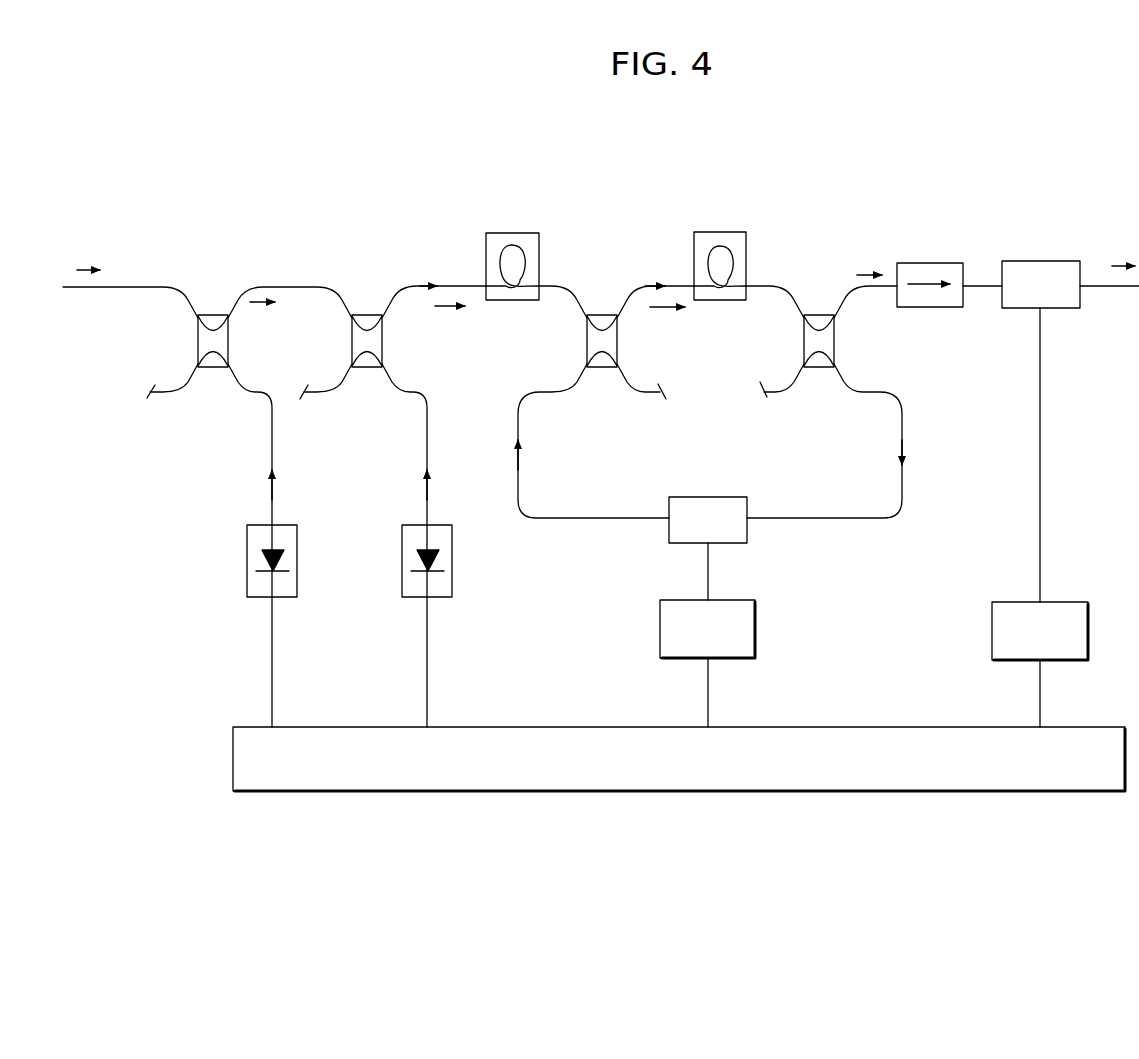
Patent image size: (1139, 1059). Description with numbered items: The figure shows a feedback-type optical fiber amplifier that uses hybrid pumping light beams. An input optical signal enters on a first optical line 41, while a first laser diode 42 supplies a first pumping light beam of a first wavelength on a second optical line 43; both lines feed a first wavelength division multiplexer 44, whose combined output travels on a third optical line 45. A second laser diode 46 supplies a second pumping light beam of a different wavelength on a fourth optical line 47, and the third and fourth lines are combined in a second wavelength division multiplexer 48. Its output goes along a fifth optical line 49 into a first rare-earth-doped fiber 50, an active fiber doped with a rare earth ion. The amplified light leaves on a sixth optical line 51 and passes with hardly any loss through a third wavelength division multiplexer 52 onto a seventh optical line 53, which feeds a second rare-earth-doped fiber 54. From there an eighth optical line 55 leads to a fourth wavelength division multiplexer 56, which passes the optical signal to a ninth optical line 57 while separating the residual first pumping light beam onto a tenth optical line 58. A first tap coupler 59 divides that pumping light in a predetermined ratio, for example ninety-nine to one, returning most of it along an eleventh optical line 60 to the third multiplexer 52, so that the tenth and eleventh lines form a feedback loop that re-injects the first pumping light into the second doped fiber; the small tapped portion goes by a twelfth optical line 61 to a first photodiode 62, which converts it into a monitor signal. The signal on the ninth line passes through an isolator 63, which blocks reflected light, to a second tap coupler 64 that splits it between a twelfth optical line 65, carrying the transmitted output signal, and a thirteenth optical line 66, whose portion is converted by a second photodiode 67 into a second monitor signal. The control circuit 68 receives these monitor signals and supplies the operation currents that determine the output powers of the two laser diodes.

The first optical line 41 is at (127, 290).
The first laser diode 42 is at (247, 560).
The second optical line 43 is at (272, 445).
The first wavelength division multiplexer 44 is at (212, 313).
The third optical line 45 is at (296, 285).
The second laser diode 46 is at (402, 560).
The fourth optical line 47 is at (427, 428).
The second wavelength division multiplexer 48 is at (367, 313).
The fifth optical line 49 is at (452, 283).
The first rare-earth-doped fiber 50 is at (508, 232).
The sixth optical line 51 is at (558, 283).
The third wavelength division multiplexer 52 is at (602, 313).
The seventh optical line 53 is at (648, 283).
The second rare-earth-doped fiber 54 is at (722, 232).
The eighth optical line 55 is at (766, 283).
The fourth wavelength division multiplexer 56 is at (818, 313).
The ninth optical line 57 is at (875, 290).
The tenth optical line 58 is at (868, 393).
The first tap coupler 59 is at (705, 497).
The eleventh optical line 60 is at (518, 486).
The twelfth optical line 61 is at (707, 570).
The first photodiode 62 is at (660, 628).
The isolator 63 is at (943, 263).
The second tap coupler 64 is at (1040, 261).
The twelfth optical line 65 is at (1122, 290).
The thirteenth optical line 66 is at (1040, 412).
The second photodiode 67 is at (992, 637).
The control circuit 68 is at (560, 727).